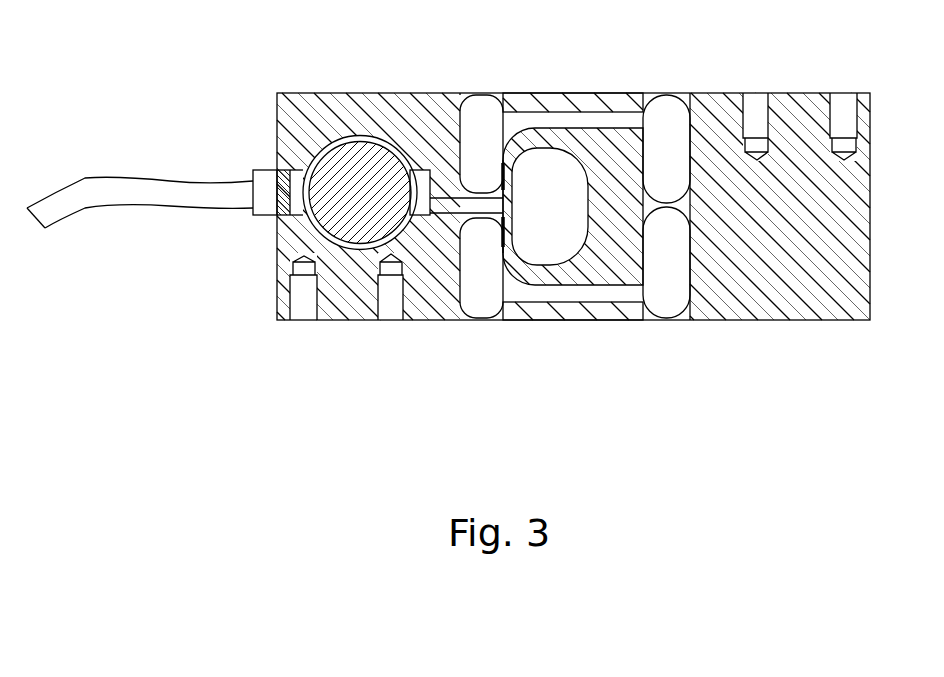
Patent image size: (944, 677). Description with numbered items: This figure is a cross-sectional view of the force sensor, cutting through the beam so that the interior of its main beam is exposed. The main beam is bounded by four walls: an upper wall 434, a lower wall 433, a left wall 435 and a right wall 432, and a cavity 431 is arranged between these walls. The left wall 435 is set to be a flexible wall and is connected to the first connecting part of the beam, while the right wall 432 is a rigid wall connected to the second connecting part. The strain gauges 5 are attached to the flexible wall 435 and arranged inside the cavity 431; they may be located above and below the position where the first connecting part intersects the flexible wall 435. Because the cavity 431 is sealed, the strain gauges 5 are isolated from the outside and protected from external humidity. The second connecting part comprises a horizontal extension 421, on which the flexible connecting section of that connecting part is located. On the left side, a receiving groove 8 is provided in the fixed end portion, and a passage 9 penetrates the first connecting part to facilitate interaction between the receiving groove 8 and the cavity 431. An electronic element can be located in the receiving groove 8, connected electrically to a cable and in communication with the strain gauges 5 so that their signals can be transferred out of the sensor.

The strain gauges 5 is at (522, 150).
The receiving groove 8 is at (332, 228).
The passage 9 is at (483, 205).
The horizontal extension 421 is at (672, 203).
The cavity 431 is at (557, 227).
The rigid wall 432 is at (625, 255).
The lower wall 433 is at (553, 275).
The upper wall 434 is at (611, 112).
The flexible wall 435 is at (503, 163).